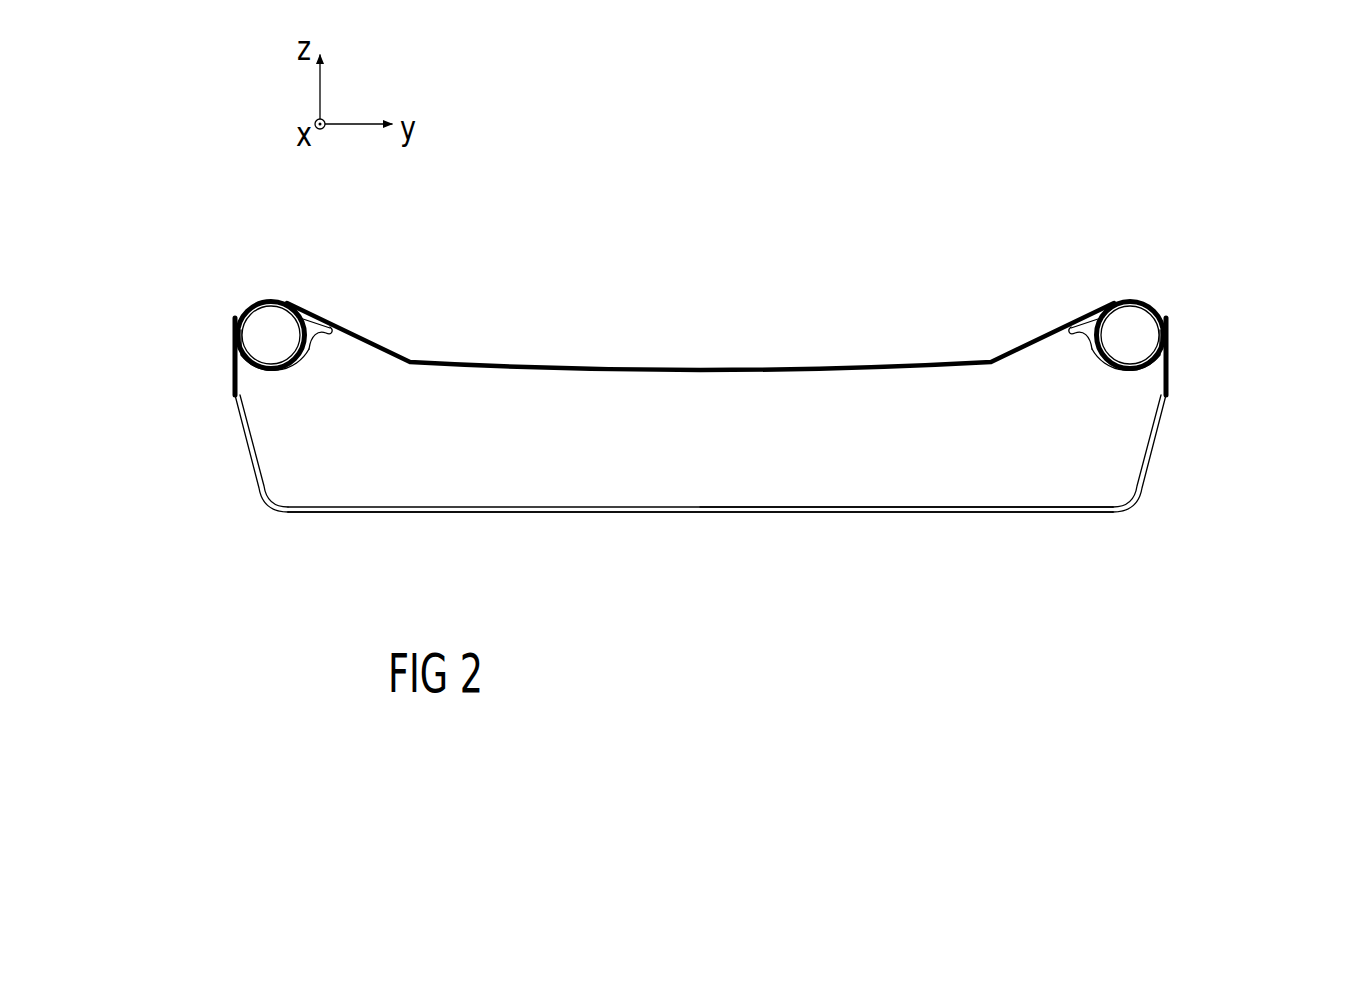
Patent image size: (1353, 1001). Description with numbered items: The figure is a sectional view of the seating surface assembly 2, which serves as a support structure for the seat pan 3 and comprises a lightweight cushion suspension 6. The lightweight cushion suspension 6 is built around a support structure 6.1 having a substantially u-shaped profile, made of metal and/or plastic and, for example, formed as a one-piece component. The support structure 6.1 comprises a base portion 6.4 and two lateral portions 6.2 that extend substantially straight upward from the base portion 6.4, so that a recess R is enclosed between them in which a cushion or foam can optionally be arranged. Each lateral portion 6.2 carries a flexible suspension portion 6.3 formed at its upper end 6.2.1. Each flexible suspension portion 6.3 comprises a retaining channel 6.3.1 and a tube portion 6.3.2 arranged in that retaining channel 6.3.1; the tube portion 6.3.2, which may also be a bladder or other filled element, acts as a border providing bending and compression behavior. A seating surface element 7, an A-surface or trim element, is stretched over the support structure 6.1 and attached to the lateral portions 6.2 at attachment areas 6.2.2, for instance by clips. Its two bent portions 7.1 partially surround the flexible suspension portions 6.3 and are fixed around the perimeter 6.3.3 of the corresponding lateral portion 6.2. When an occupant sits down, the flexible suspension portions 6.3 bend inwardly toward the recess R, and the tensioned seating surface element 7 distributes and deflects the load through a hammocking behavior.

The seating surface assembly 2 is at (453, 288).
The seat pan 3 is at (941, 365).
The lightweight cushion suspension 6 is at (702, 419).
The support structure 6.1 is at (1140, 478).
The lateral portion 6.2 is at (702, 446).
The upper end 6.2.1 is at (1166, 398).
The attachment area 6.2.2 is at (232, 385).
The flexible suspension portion 6.3 is at (702, 336).
The retaining channel 6.3.1 is at (280, 377).
The tube portion 6.3.2 is at (263, 327).
The perimeter 6.3.3 is at (233, 370).
The base portion 6.4 is at (537, 512).
The seating surface element 7 is at (717, 283).
The bent portion 7.1 is at (285, 300).
The recess R is at (830, 480).